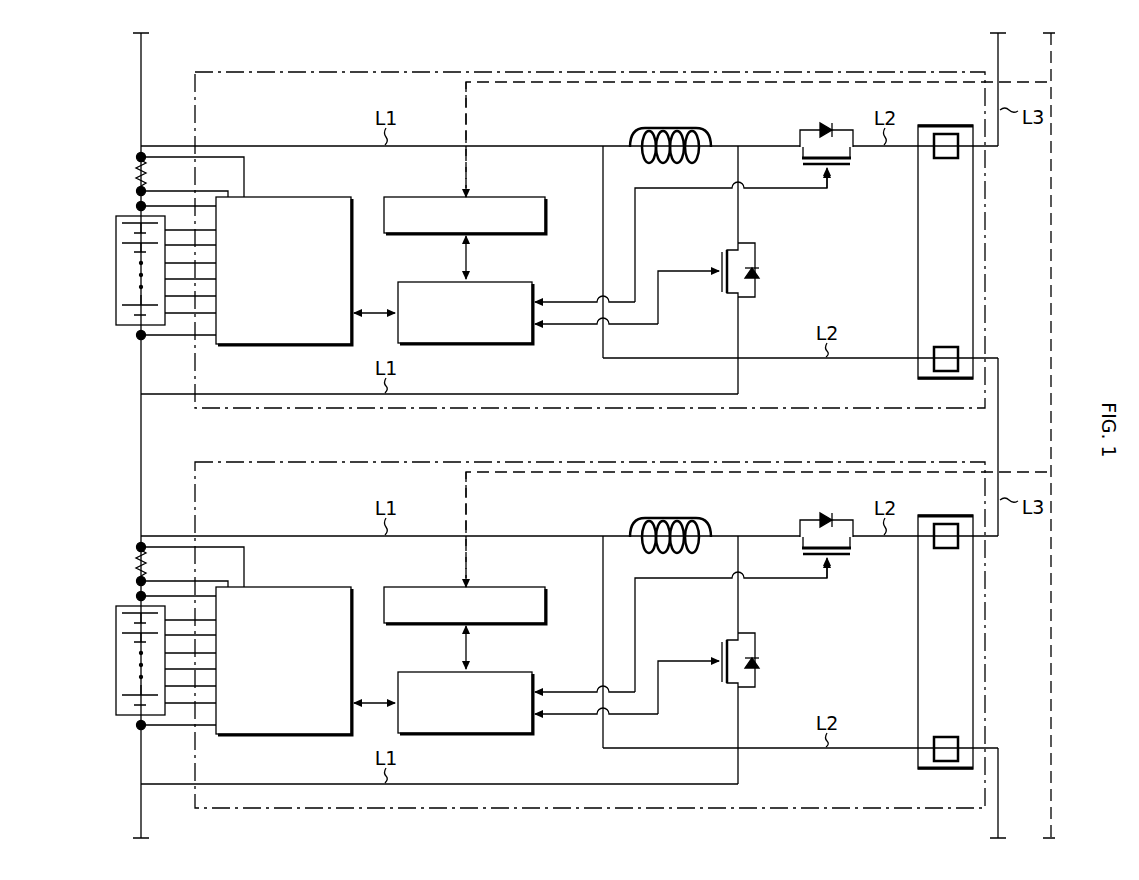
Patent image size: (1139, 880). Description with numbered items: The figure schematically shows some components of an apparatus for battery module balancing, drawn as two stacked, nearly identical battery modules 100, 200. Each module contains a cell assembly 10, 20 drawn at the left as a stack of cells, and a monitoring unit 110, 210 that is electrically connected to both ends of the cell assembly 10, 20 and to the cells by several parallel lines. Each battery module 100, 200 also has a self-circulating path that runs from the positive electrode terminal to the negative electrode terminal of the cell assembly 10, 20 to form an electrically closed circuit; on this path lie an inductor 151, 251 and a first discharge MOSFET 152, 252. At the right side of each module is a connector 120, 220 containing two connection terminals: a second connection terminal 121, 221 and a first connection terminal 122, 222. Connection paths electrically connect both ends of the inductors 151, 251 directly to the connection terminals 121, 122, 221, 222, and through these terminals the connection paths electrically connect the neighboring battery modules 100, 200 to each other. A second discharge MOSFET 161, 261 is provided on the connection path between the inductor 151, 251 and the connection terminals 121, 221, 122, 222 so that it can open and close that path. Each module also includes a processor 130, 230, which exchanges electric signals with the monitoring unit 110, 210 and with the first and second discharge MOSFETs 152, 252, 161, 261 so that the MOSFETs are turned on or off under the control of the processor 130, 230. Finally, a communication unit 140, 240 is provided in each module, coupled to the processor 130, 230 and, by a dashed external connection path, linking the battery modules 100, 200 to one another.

The cell assembly 10 is at (116, 271).
The cell assembly 20 is at (120, 660).
The battery module 100 is at (247, 72).
The battery module 200 is at (590, 615).
The monitoring unit 110 is at (329, 197).
The monitoring unit 210 is at (284, 642).
The connector 120 is at (971, 252).
The connector 220 is at (971, 642).
The second connection terminal 121 is at (946, 160).
The second connection terminal 221 is at (946, 556).
The first connection terminal 122 is at (945, 346).
The first connection terminal 222 is at (946, 730).
The processor 130 is at (512, 282).
The processor 230 is at (465, 684).
The communication unit 140 is at (527, 197).
The communication unit 240 is at (465, 586).
The inductor 151 is at (668, 128).
The inductor 251 is at (670, 517).
The first discharge MOSFET 152 is at (760, 268).
The first discharge MOSFET 252 is at (775, 660).
The second discharge MOSFET 161 is at (830, 122).
The second discharge MOSFET 261 is at (826, 527).